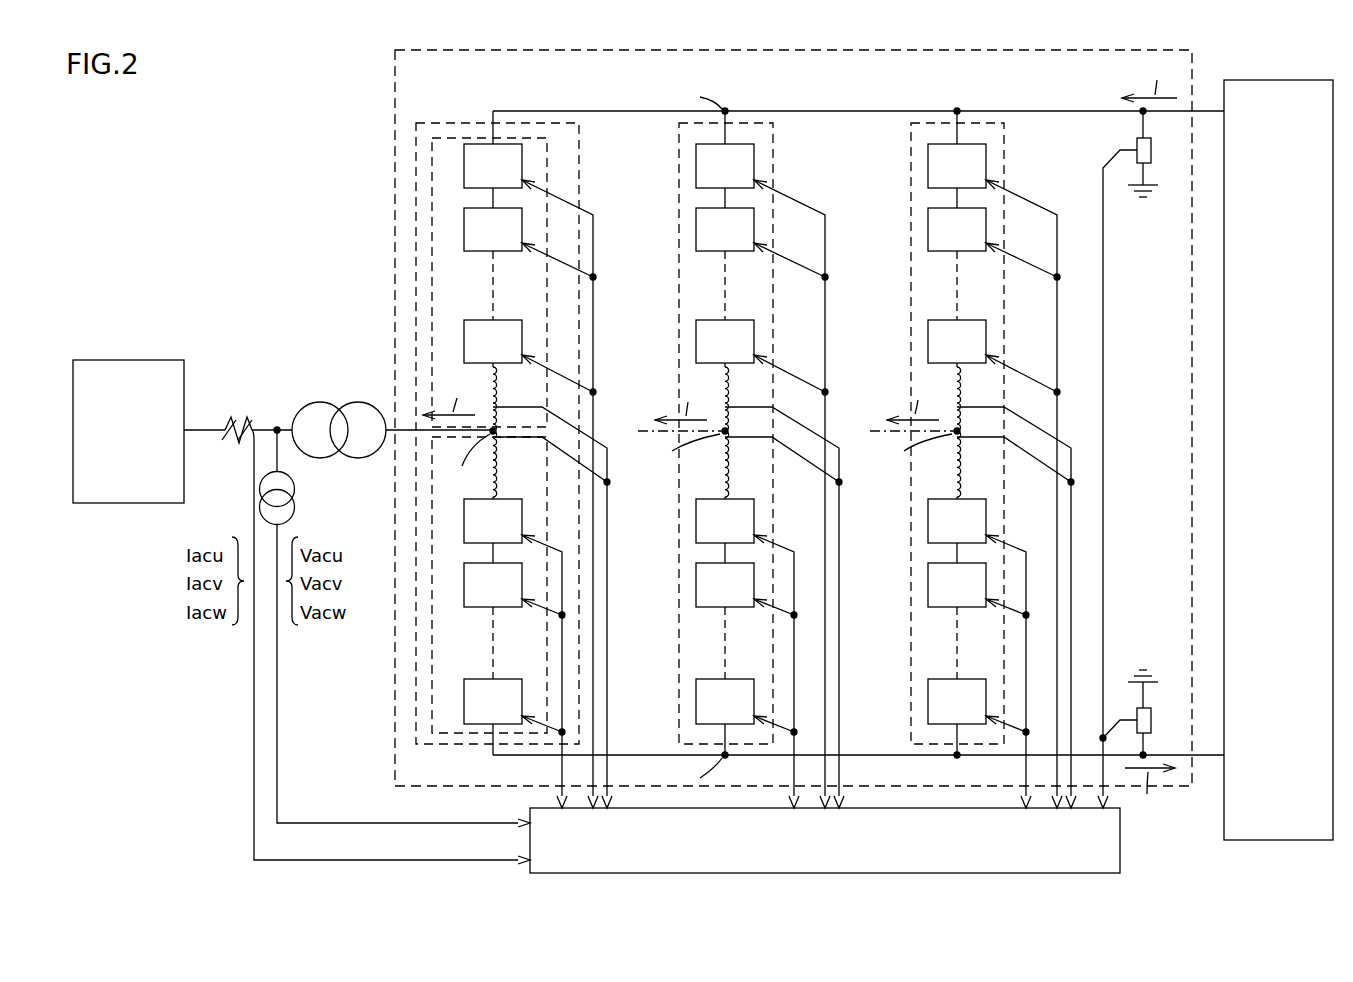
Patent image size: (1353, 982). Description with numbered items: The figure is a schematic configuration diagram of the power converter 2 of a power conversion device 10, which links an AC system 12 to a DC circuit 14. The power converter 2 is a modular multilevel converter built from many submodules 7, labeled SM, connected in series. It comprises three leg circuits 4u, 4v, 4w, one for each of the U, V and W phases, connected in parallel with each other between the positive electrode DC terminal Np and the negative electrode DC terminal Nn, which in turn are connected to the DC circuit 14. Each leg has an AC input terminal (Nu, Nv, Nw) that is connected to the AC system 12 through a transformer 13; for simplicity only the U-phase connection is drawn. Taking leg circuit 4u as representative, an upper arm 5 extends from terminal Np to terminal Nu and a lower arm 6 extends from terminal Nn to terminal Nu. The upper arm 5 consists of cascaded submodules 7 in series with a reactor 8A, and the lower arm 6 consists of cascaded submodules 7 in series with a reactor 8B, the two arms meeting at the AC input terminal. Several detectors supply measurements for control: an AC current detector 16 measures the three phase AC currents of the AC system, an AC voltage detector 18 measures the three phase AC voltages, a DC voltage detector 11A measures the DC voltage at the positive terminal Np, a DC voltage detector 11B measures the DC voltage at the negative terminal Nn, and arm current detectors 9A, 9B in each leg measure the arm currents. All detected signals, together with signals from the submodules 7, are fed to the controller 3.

The power converter 2 is at (394, 95).
The controller 3 is at (1122, 840).
The leg circuit 4u is at (436, 123).
The leg circuit 4v is at (757, 123).
The leg circuit 4w is at (987, 123).
The upper arm 5 is at (424, 272).
The lower arm 6 is at (424, 642).
The submodule 7 is at (464, 166).
The reactor 8A is at (500, 389).
The reactor 8B is at (500, 491).
The arm current detector 9A is at (500, 424).
The arm current detector 9B is at (500, 459).
The power conversion device 10 is at (345, 143).
The DC voltage detector 11A is at (1152, 152).
The DC voltage detector 11B is at (1152, 722).
The AC system 12 is at (127, 360).
The transformer 13 is at (315, 404).
The DC circuit 14 is at (1277, 80).
The AC current detector 16 is at (229, 425).
The AC voltage detector 18 is at (294, 491).